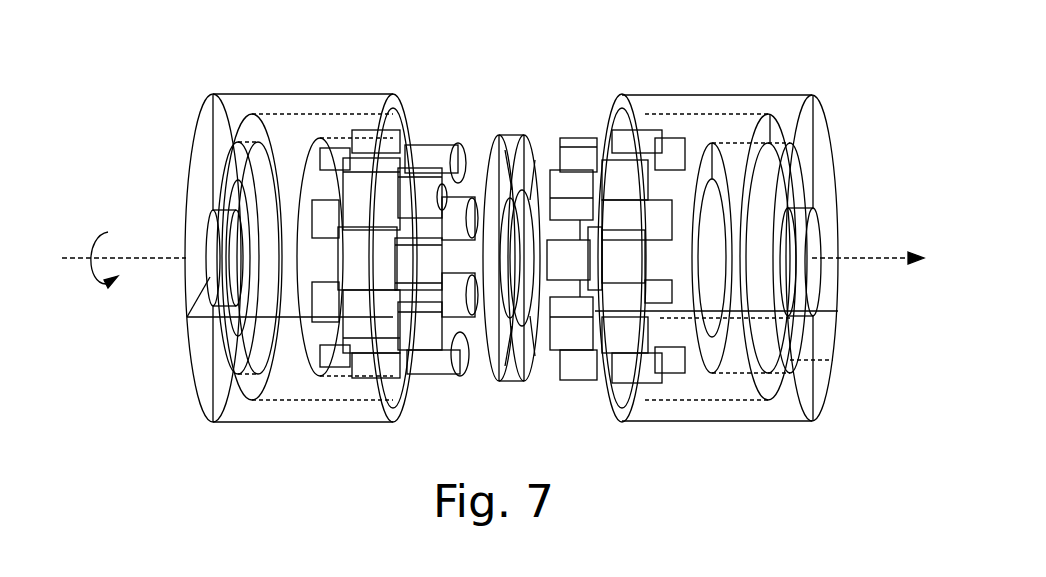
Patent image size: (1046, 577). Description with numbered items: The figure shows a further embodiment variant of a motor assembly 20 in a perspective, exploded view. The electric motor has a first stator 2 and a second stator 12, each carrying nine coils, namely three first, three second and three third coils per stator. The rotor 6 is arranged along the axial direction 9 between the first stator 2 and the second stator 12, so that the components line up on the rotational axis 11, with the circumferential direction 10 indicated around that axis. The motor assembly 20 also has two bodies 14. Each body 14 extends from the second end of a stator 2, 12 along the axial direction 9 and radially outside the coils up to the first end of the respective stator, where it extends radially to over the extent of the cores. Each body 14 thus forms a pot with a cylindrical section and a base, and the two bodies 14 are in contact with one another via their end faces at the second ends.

The first stator 2 is at (607, 119).
The rotor 6 is at (497, 350).
The axial direction 9 is at (927, 269).
The circumferential direction 10 is at (123, 266).
The rotational axis 11 is at (888, 259).
The second stator 12 is at (426, 129).
The body 14 is at (330, 116).
The motor assembly 20 is at (832, 84).